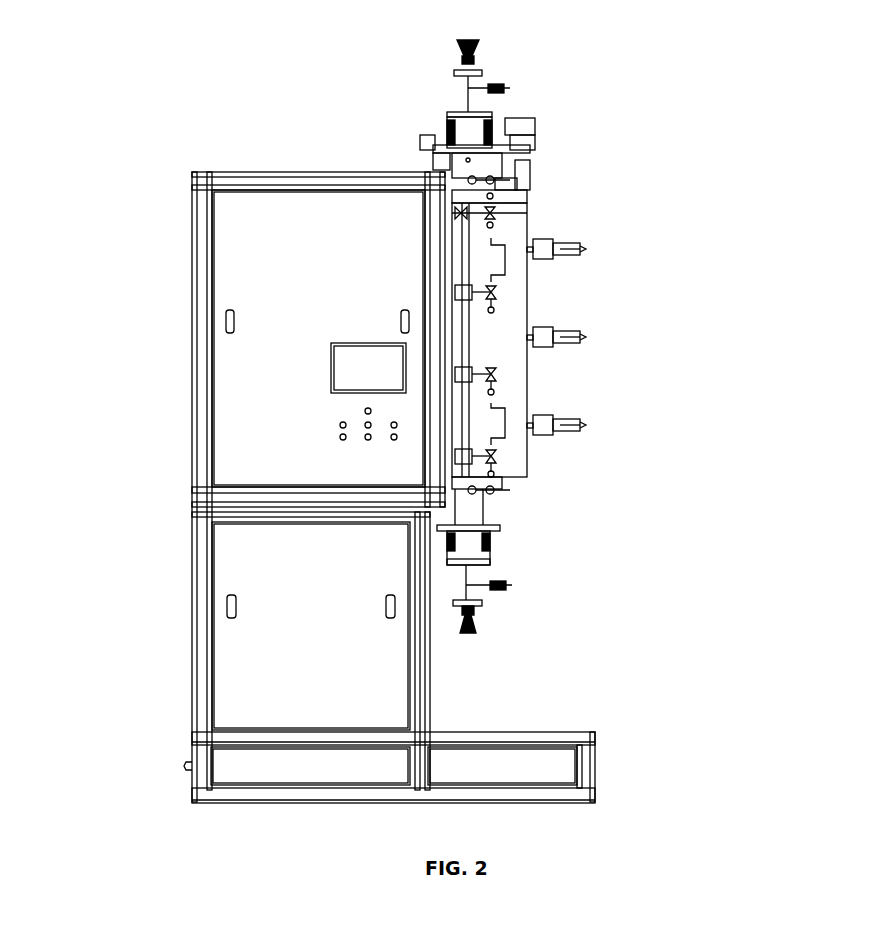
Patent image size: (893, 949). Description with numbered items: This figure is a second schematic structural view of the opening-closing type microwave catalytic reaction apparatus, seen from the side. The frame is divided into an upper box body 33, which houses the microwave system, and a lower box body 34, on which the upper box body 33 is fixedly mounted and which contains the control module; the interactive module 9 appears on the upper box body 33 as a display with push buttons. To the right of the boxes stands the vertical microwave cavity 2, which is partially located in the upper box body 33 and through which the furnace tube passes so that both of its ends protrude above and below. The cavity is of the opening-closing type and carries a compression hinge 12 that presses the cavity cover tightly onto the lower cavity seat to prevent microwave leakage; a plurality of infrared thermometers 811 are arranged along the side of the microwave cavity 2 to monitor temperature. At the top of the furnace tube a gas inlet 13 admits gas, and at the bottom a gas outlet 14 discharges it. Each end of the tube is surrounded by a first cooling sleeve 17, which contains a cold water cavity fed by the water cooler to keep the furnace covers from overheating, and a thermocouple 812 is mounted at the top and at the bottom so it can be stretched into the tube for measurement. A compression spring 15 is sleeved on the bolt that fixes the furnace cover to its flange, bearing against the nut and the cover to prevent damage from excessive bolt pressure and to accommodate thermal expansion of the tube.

The microwave cavity 2 is at (510, 355).
The interactive module 9 is at (352, 367).
The compression hinge 12 is at (464, 212).
The gas inlet 13 is at (497, 87).
The gas outlet 14 is at (502, 588).
The compression spring 15 is at (492, 540).
The first cooling sleeve 17 is at (462, 130).
The upper box body 33 is at (240, 213).
The lower box body 34 is at (262, 654).
The infrared thermometer 811 is at (572, 430).
The thermocouple 812 is at (458, 44).